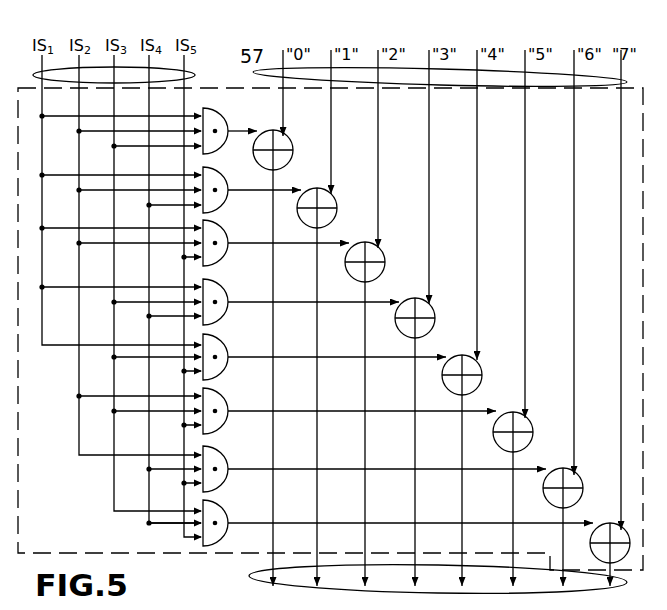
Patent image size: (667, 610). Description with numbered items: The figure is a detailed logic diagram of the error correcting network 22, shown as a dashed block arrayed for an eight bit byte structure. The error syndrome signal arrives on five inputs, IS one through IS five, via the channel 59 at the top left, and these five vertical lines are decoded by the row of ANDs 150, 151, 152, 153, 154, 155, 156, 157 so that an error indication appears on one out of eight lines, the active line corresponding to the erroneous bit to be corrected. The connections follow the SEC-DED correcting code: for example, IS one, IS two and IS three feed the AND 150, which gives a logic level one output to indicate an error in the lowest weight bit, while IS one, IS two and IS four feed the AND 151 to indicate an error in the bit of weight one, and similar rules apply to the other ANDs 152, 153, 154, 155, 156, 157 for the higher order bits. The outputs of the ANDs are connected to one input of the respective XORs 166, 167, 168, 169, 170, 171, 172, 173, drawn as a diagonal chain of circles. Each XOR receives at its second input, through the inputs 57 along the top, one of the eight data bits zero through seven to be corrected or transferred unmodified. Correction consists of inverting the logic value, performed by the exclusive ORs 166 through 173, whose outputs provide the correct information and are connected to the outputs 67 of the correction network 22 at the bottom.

The error correcting network 22 is at (152, 553).
The inputs 57 is at (253, 69).
The channel 59 is at (195, 75).
The outputs 67 is at (250, 579).
The AND 150 is at (221, 118).
The AND 151 is at (221, 180).
The AND 152 is at (221, 238).
The AND 153 is at (221, 295).
The AND 154 is at (221, 353).
The AND 155 is at (221, 404).
The AND 156 is at (221, 460).
The AND 157 is at (221, 516).
The XOR 166 is at (287, 138).
The XOR 167 is at (332, 196).
The XOR 168 is at (381, 249).
The XOR 169 is at (430, 306).
The XOR 170 is at (477, 362).
The XOR 171 is at (528, 419).
The XOR 172 is at (577, 474).
The XOR 173 is at (603, 526).